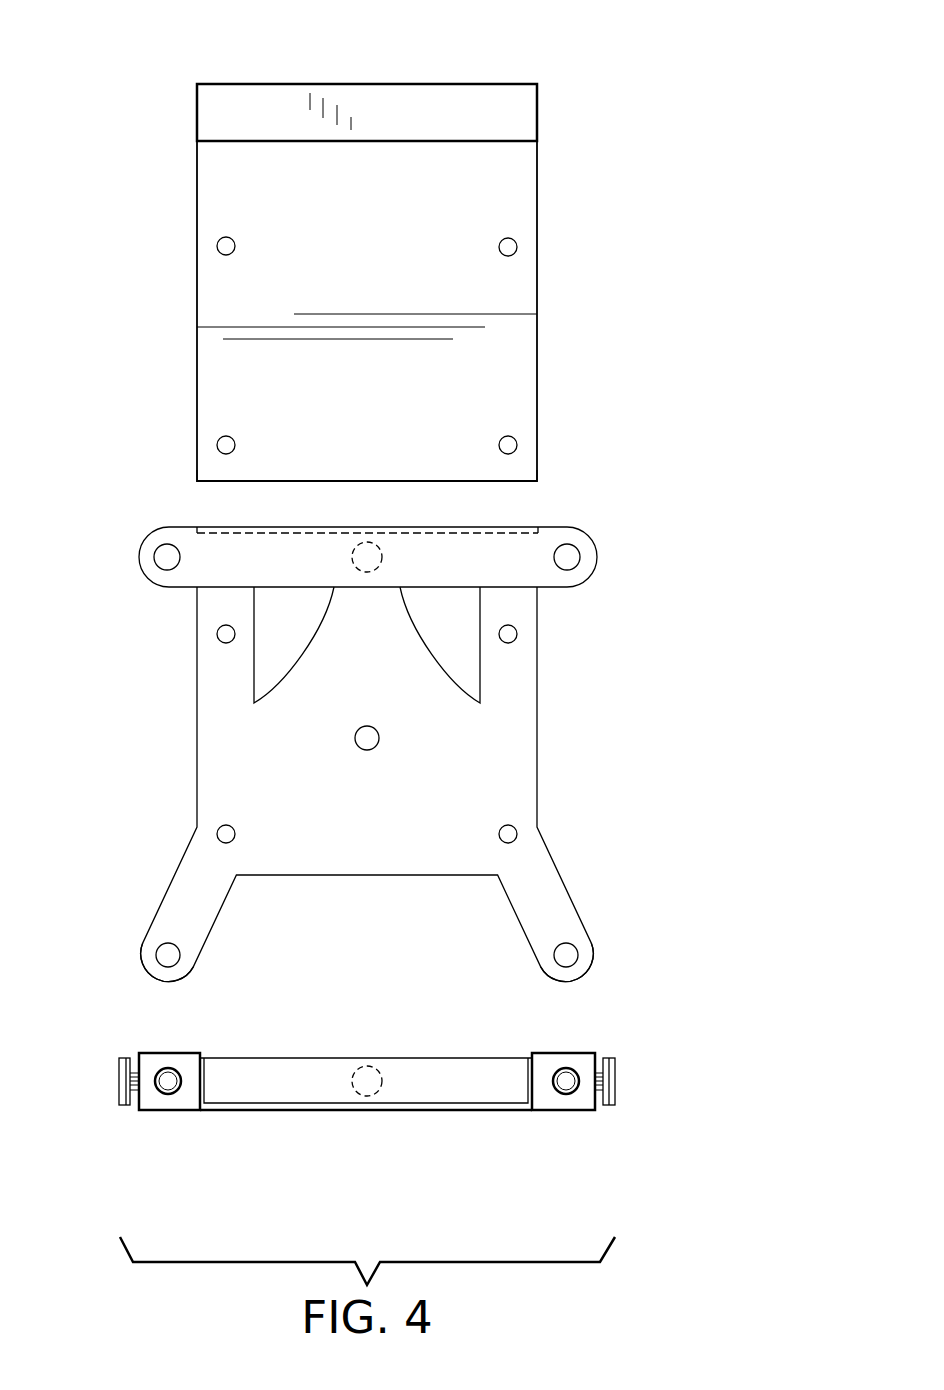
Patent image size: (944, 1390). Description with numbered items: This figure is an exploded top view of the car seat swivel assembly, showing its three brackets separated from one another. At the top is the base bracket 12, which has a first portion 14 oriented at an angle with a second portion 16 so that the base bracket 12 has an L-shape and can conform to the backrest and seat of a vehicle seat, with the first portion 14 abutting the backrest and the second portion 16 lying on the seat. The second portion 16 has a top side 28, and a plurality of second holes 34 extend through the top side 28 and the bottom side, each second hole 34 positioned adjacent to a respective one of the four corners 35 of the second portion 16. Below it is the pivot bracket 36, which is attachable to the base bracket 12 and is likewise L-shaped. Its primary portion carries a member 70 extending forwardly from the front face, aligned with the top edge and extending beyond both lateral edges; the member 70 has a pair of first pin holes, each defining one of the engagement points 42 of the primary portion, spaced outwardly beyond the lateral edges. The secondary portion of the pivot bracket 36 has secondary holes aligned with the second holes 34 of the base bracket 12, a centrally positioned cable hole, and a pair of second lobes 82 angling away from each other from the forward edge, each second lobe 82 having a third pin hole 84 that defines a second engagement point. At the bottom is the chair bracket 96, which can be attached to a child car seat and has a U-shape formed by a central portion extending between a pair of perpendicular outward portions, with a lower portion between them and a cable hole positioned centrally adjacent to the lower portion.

The base bracket 12 is at (232, 68).
The first portion 14 is at (500, 84).
The second portion 16 is at (537, 262).
The top side 28 is at (213, 302).
The second holes 34 is at (206, 246).
The corners 35 is at (197, 481).
The pivot bracket 36 is at (565, 745).
The engagement points 42 is at (140, 564).
The member 70 is at (210, 565).
The second lobes 82 is at (143, 943).
The third pin hole 84 is at (160, 927).
The chair bracket 96 is at (408, 1134).